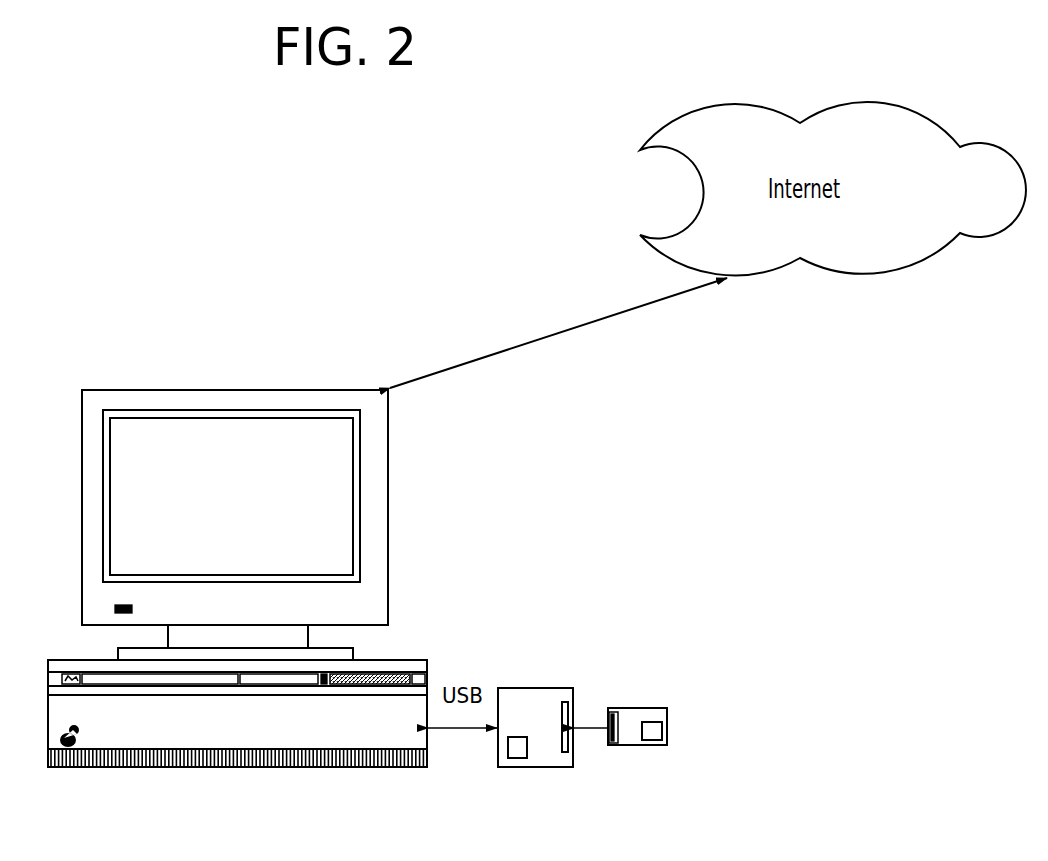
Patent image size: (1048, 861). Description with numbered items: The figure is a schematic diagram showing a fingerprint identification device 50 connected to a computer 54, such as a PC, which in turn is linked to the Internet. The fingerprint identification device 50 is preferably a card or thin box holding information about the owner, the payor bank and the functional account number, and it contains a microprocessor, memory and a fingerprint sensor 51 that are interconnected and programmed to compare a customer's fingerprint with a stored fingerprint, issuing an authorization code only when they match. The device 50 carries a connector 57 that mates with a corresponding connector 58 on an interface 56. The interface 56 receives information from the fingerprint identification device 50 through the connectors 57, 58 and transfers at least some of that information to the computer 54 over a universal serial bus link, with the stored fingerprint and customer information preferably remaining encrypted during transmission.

The fingerprint identification device 50 is at (622, 708).
The fingerprint sensor 51 is at (498, 752).
The computer 54 is at (166, 390).
The interface 56 is at (552, 688).
The connector 57 is at (619, 748).
The connector 58 is at (565, 752).